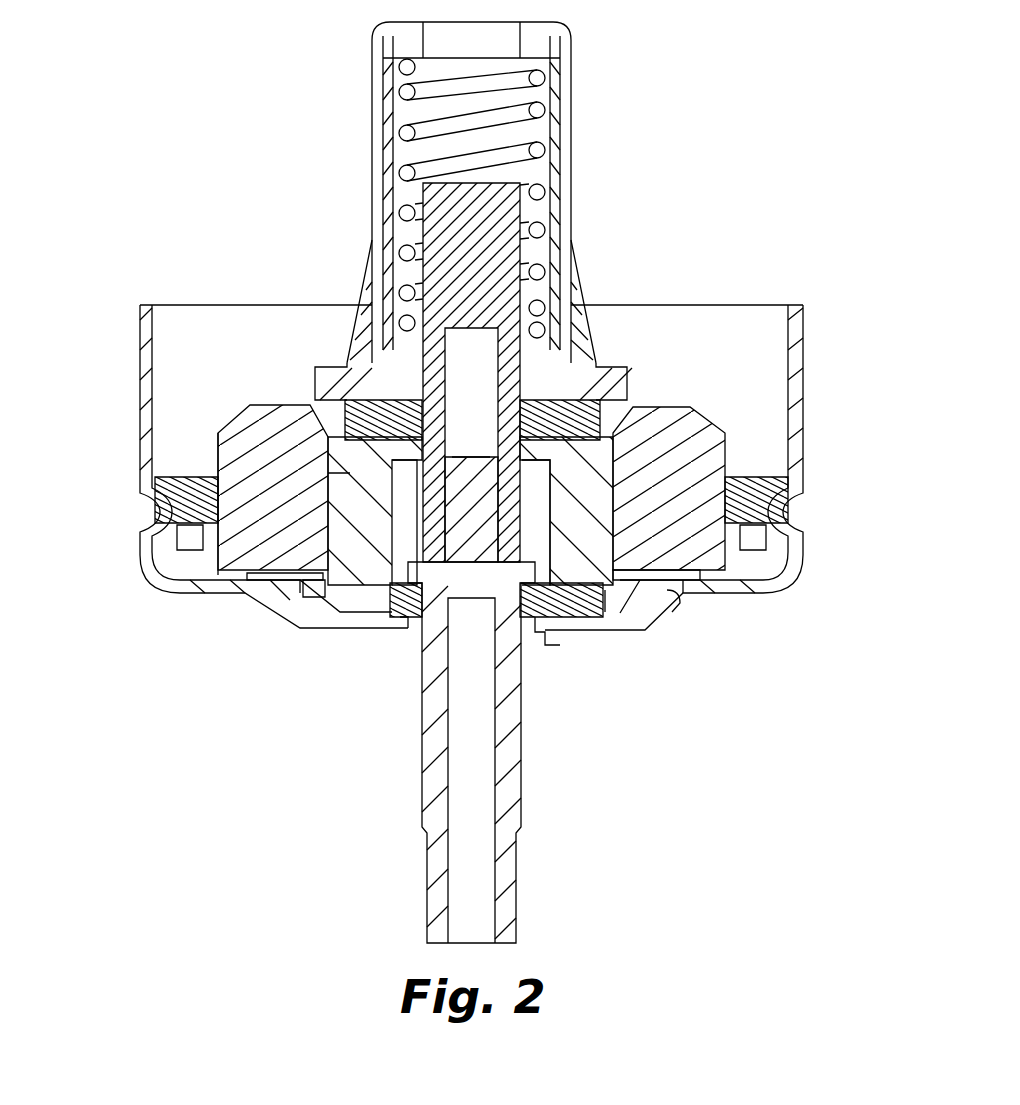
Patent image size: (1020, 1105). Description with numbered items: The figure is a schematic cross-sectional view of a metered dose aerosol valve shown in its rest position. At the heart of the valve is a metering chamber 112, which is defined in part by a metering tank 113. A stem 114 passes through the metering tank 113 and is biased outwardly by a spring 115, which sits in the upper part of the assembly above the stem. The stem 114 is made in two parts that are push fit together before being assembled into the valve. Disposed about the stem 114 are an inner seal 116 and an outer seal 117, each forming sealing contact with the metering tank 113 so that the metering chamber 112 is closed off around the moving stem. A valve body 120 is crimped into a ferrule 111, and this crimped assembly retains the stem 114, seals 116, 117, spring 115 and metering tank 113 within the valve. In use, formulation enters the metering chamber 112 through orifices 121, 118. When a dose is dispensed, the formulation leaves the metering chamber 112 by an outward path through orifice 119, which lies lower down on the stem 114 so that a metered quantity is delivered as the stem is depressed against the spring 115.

The ferrule 111 is at (677, 600).
The metering chamber 112 is at (535, 492).
The metering tank 113 is at (350, 473).
The stem 114 is at (432, 715).
The spring 115 is at (405, 128).
The inner seal 116 is at (348, 420).
The outer seal 117 is at (290, 603).
The orifice 118 is at (512, 380).
The orifice 119 is at (425, 652).
The valve body 120 is at (650, 425).
The orifice 121 is at (410, 397).